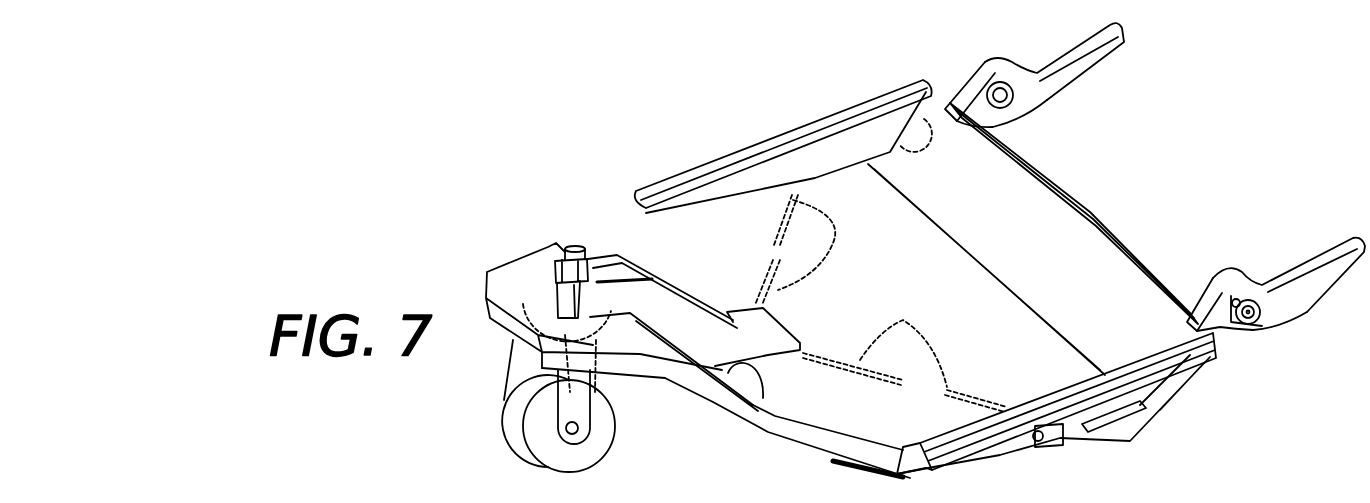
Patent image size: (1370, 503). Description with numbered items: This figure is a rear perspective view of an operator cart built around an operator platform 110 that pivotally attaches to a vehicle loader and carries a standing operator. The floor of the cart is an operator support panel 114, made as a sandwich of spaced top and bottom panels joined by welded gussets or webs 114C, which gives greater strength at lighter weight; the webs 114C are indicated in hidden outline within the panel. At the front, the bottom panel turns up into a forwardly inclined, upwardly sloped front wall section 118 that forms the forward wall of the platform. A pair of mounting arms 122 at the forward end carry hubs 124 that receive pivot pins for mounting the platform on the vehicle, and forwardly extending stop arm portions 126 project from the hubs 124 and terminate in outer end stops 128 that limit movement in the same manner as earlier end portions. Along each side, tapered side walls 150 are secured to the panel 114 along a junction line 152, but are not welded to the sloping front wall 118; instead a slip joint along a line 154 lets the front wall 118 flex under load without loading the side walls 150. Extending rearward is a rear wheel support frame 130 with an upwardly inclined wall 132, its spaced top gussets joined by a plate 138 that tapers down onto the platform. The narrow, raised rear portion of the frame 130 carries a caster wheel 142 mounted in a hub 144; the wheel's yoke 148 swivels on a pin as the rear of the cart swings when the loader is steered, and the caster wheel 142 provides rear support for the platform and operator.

The operator platform 110 is at (606, 200).
The operator support panel 114 is at (822, 394).
The gussets or webs 114C is at (834, 244).
The front wall section 118 is at (1036, 218).
The mounting arms 122 is at (960, 100).
The hubs 124 is at (1260, 292).
The stop arm portion 126 is at (1040, 100).
The outer end stops 128 is at (1097, 58).
The rear wheel support frame 130 is at (648, 362).
The upwardly inclined wall 132 is at (745, 404).
The plate 138 is at (612, 256).
The caster wheel 142 is at (492, 424).
The hub 144 is at (565, 292).
The yoke 148 is at (580, 406).
The side walls 150 is at (783, 170).
The junction line 152 is at (808, 181).
The slip joint line 154 is at (914, 142).